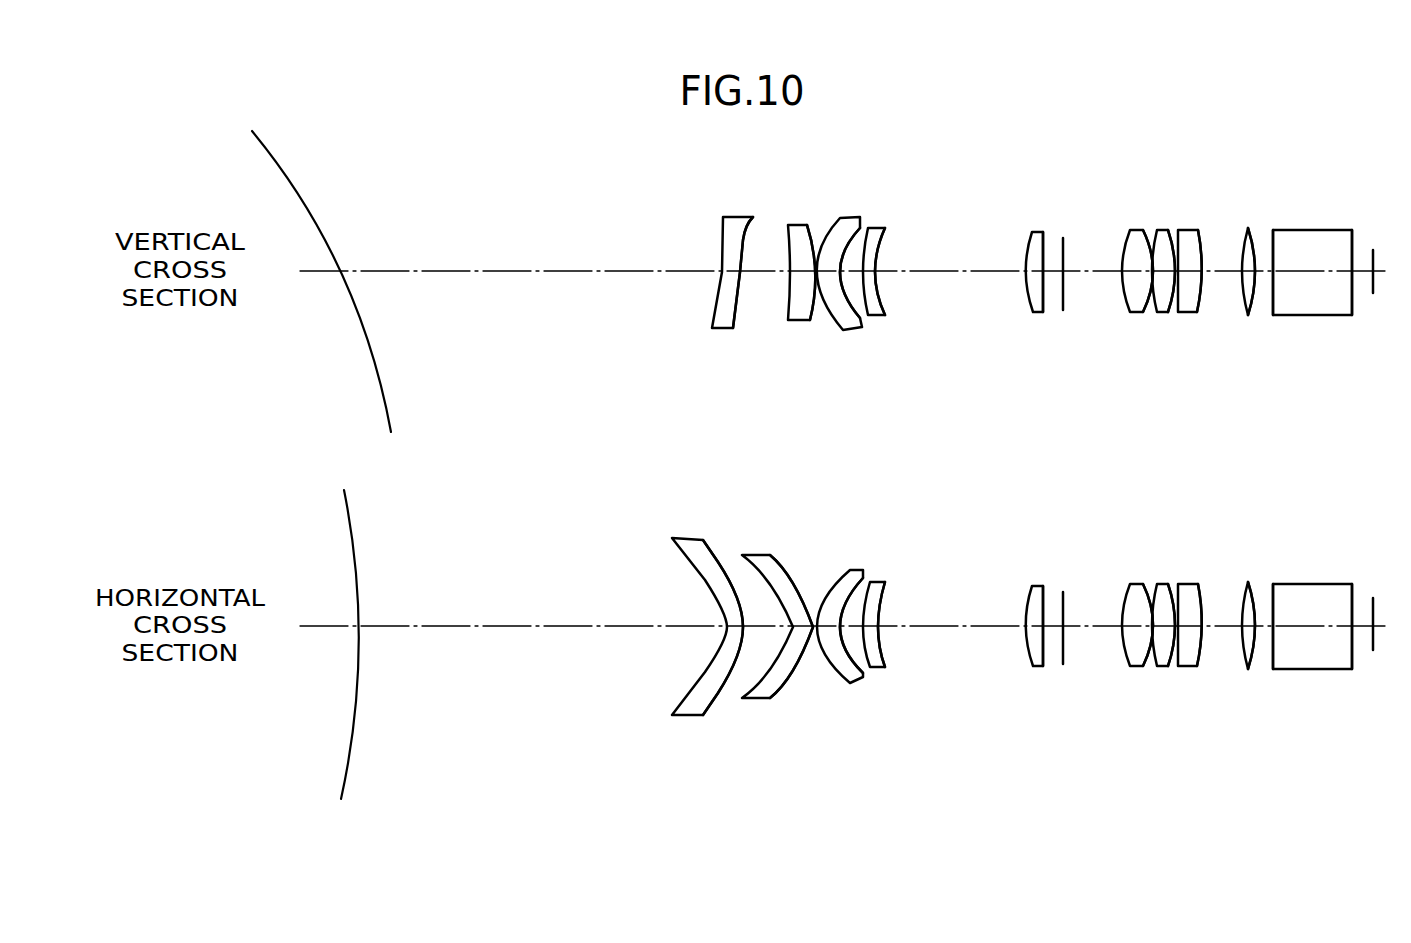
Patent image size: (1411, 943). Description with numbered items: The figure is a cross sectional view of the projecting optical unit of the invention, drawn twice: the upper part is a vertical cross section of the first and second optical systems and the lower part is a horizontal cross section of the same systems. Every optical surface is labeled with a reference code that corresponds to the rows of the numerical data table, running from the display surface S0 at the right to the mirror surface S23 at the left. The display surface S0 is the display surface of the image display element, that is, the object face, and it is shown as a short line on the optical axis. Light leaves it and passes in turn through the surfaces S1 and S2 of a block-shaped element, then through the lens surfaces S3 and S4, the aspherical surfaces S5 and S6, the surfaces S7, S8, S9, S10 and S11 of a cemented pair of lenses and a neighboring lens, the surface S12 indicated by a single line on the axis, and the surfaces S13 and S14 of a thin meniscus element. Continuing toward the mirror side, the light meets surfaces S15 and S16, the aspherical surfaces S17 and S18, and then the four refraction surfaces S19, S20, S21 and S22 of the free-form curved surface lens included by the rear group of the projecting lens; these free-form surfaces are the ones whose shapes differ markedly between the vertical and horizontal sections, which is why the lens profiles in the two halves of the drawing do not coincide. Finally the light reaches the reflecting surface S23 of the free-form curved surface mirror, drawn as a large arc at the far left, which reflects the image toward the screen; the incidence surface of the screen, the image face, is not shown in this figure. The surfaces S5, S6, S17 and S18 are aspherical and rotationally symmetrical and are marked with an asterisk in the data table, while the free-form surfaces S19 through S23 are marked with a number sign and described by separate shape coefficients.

The display surface of the image display element (object face) S0 is at (1375, 598).
The optical surface S1 is at (1352, 316).
The optical surface S2 is at (1280, 584).
The optical surface S3 is at (1273, 315).
The optical surface S4 is at (1250, 582).
The aspherical surface S5 is at (1246, 315).
The aspherical surface S6 is at (1198, 584).
The optical surface S7 is at (1178, 312).
The optical surface S8 is at (1162, 584).
The optical surface S9 is at (1152, 312).
The optical surface S10 is at (1142, 584).
The optical surface S11 is at (1128, 312).
The optical surface S12 is at (1063, 592).
The optical surface S13 is at (1043, 312).
The optical surface S14 is at (1033, 587).
The optical surface S15 is at (886, 316).
The optical surface S16 is at (873, 581).
The aspherical surface S17 is at (862, 328).
The aspherical surface S18 is at (845, 572).
The refraction surface of the free-form curved surface lens S19 is at (811, 322).
The refraction surface of the free-form curved surface lens S20 is at (788, 322).
The refraction surface of the free-form curved surface lens S21 is at (735, 326).
The refraction surface of the free-form curved surface lens S22 is at (712, 323).
The reflecting surface of the free-form curved surface mirror S23 is at (390, 410).